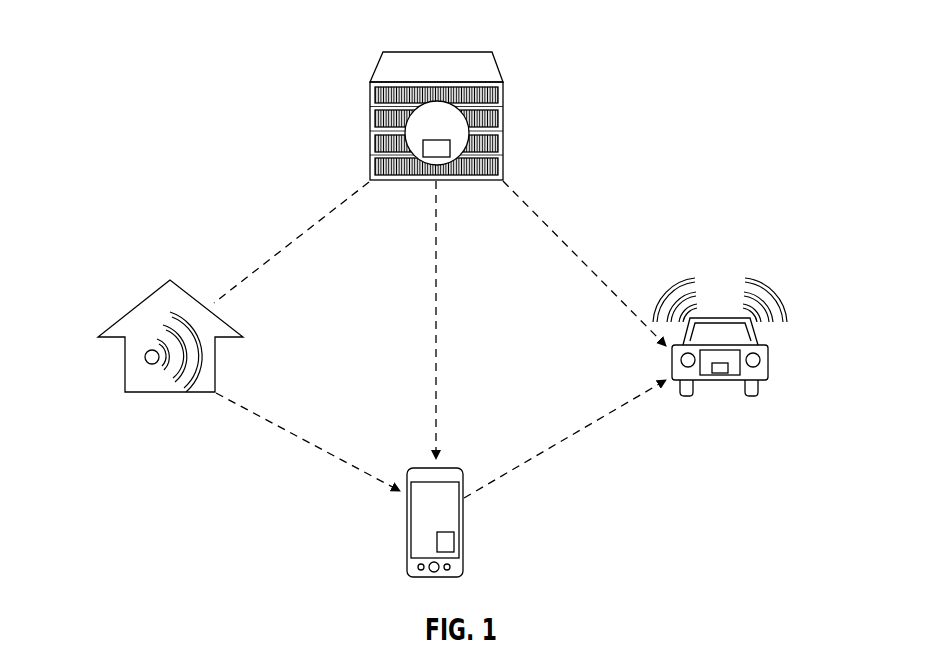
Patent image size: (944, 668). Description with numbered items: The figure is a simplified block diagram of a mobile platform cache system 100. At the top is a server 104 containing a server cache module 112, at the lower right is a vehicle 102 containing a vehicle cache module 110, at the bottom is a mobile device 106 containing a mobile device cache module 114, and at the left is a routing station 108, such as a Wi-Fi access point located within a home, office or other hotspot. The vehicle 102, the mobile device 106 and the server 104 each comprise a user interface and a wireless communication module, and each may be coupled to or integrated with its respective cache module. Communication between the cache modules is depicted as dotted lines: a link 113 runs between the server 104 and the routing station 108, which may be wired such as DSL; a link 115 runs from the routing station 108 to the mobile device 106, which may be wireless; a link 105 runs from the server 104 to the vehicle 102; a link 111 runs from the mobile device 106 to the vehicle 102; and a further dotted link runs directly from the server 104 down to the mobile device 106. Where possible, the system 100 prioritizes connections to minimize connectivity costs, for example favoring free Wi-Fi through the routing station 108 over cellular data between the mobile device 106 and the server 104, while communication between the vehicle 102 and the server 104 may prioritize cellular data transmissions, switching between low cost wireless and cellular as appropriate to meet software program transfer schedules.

The mobile platform cache system 100 is at (147, 41).
The vehicle 102 is at (779, 332).
The server 104 is at (398, 52).
The communication link server-vehicle 105 is at (527, 205).
The mobile device 106 is at (422, 467).
The routing station 108 is at (145, 300).
The vehicle cache module 110 is at (728, 370).
The communication link mobile device-vehicle 111 is at (565, 440).
The server cache module 112 is at (450, 148).
The communication link server-home 113 is at (338, 205).
The mobile device cache module 114 is at (448, 545).
The communication link home-mobile device 115 is at (270, 420).